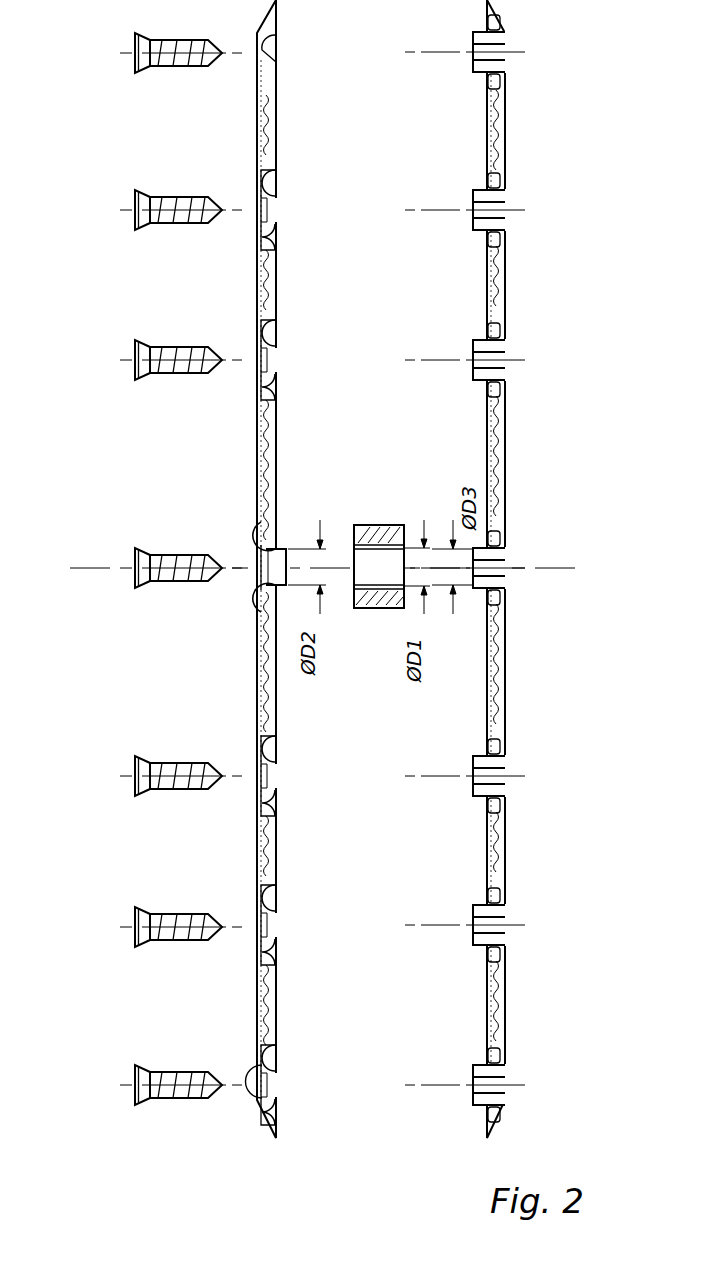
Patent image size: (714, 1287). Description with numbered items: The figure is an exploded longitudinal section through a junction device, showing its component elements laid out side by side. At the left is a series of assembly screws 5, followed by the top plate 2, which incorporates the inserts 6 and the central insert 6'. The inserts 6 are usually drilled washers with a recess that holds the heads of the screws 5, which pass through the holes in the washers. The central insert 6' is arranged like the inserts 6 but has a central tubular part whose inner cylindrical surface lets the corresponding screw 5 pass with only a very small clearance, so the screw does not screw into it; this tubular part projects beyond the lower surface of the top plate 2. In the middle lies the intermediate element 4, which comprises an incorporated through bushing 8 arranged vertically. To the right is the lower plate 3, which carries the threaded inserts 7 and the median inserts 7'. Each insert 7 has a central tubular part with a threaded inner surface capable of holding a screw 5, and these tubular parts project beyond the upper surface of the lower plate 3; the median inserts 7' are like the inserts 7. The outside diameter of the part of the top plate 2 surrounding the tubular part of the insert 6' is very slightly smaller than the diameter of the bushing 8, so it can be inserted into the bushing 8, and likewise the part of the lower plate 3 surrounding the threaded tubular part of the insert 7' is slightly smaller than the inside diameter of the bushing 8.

The top plate 2 is at (272, 433).
The lower plate 3 is at (505, 433).
The intermediate element 4 is at (373, 540).
The assembly screws 5 is at (136, 355).
The inserts 6 is at (297, 580).
The central insert 6' is at (286, 545).
The threaded inserts 7 is at (499, 568).
The median inserts 7' is at (501, 554).
The through bushing 8 is at (388, 600).